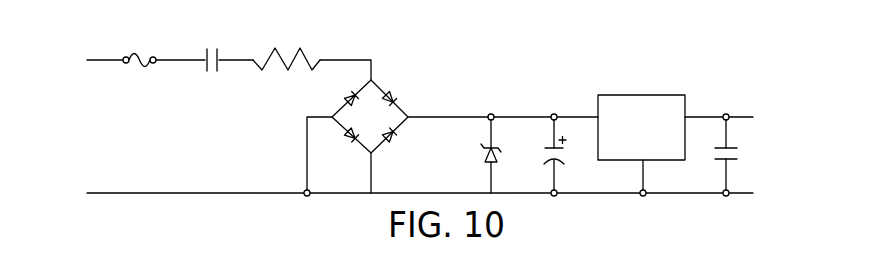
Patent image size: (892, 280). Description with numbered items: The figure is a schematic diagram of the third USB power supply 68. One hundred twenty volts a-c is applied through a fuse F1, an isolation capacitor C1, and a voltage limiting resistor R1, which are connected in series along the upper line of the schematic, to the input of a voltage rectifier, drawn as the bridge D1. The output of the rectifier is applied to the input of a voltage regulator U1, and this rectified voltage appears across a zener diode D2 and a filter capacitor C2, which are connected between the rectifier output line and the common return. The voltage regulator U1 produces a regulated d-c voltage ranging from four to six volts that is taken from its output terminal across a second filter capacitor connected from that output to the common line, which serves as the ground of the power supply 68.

The third USB power supply 68 is at (523, 93).
The fuse F1 is at (139, 50).
The isolation capacitor C1 is at (212, 52).
The voltage limiting resistor R1 is at (286, 52).
The zener diode D1 is at (372, 117).
The zener diode D2 is at (497, 153).
The filter capacitor C2 is at (559, 155).
The voltage regulator U1 is at (641, 136).